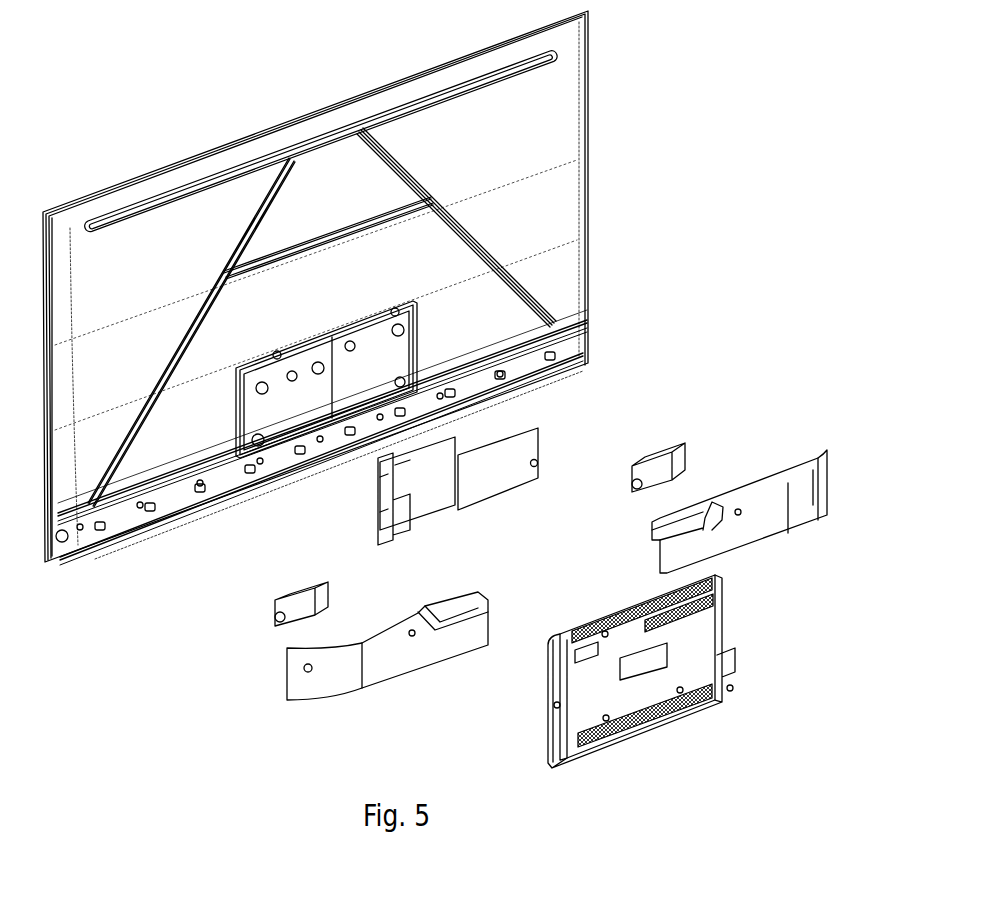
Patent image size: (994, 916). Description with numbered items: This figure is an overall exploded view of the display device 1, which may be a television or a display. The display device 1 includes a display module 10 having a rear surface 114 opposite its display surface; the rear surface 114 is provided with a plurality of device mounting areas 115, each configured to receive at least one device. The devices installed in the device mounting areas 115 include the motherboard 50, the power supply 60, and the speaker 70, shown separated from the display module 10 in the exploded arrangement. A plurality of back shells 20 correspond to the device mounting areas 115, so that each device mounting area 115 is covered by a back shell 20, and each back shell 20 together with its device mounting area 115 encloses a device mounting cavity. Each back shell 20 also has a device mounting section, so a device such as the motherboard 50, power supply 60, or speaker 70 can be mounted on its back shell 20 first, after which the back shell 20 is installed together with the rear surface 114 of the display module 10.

The display device 1 is at (88, 72).
The display module 10 is at (590, 203).
The rear surface 114 is at (563, 268).
The device mounting area 115 is at (523, 368).
The back shell 20 is at (770, 513).
The motherboard 50 is at (430, 500).
The power supply 60 is at (500, 470).
The speaker 70 is at (658, 457).